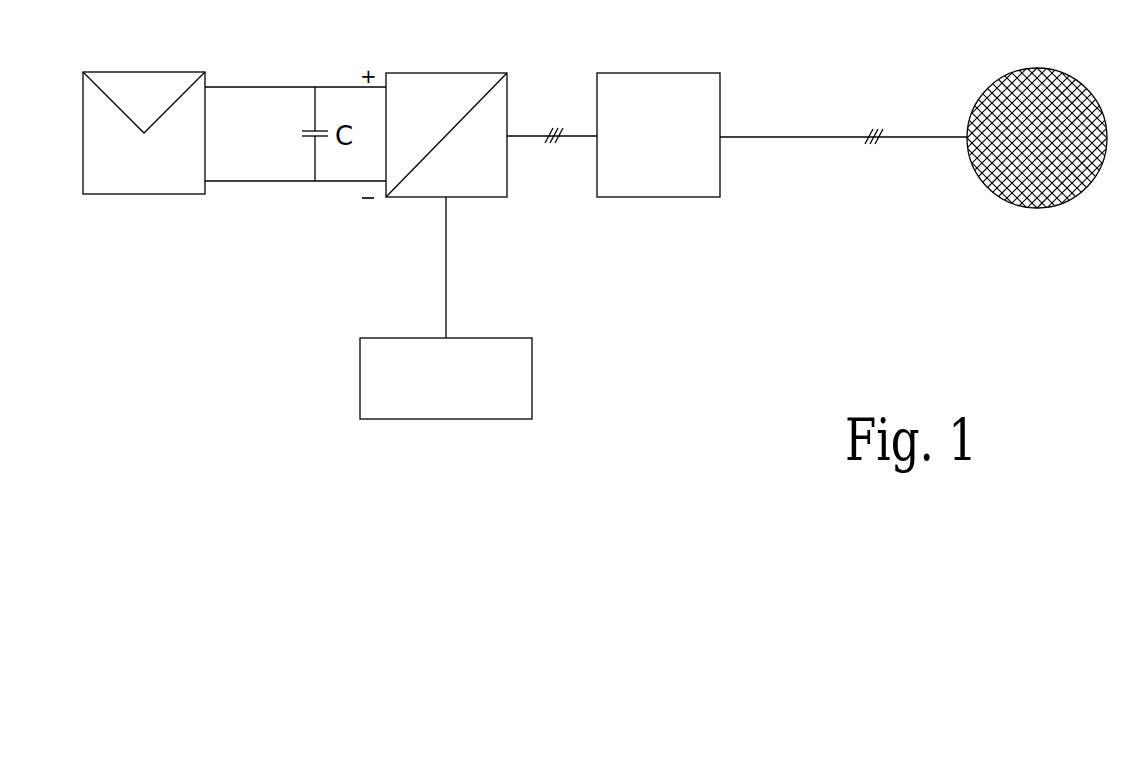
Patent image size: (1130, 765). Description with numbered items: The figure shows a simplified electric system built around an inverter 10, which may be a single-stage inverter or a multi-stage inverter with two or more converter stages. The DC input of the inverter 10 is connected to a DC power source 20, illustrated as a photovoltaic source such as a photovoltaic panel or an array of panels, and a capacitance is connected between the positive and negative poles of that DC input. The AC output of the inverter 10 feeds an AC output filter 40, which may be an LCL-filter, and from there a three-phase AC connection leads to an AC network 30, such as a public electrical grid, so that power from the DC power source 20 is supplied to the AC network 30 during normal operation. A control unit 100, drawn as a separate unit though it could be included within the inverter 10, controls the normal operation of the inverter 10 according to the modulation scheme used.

The inverter 10 is at (458, 72).
The DC power source 20 is at (157, 72).
The AC network 30 is at (1038, 210).
The AC output filter 40 is at (670, 72).
The control unit 100 is at (483, 338).